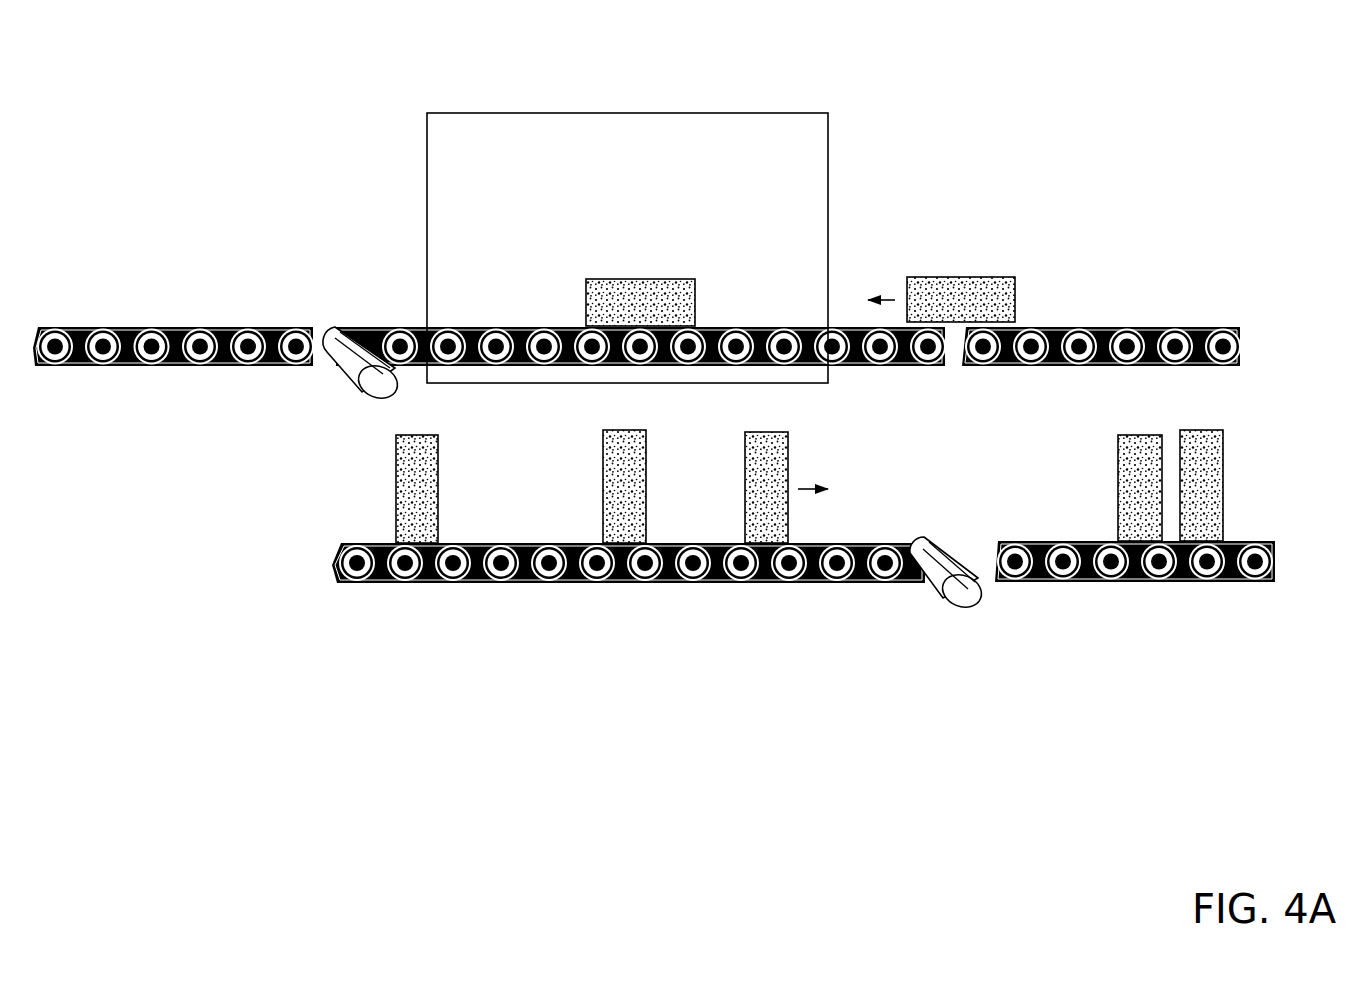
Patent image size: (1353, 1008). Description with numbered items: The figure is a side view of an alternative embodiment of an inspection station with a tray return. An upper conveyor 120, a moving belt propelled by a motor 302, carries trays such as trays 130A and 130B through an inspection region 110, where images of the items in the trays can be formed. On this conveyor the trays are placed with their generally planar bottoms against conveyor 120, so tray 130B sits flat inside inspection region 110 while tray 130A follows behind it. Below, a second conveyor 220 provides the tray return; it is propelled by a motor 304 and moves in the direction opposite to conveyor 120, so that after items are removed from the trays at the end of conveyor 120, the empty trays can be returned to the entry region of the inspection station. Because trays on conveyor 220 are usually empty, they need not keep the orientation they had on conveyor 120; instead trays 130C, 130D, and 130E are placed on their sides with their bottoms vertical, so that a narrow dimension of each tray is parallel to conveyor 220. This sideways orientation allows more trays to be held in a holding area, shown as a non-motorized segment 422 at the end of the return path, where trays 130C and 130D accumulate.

The inspection region 110 is at (592, 113).
The conveyor 120 is at (469, 327).
The tray 130A is at (957, 275).
The tray 130B is at (672, 272).
The tray 130C is at (1218, 450).
The tray 130D is at (1133, 435).
The tray 130E is at (762, 432).
The conveyor 220 is at (342, 542).
The motor 302 is at (331, 322).
The motor 304 is at (930, 603).
The non-motorized segment 422 is at (1147, 582).